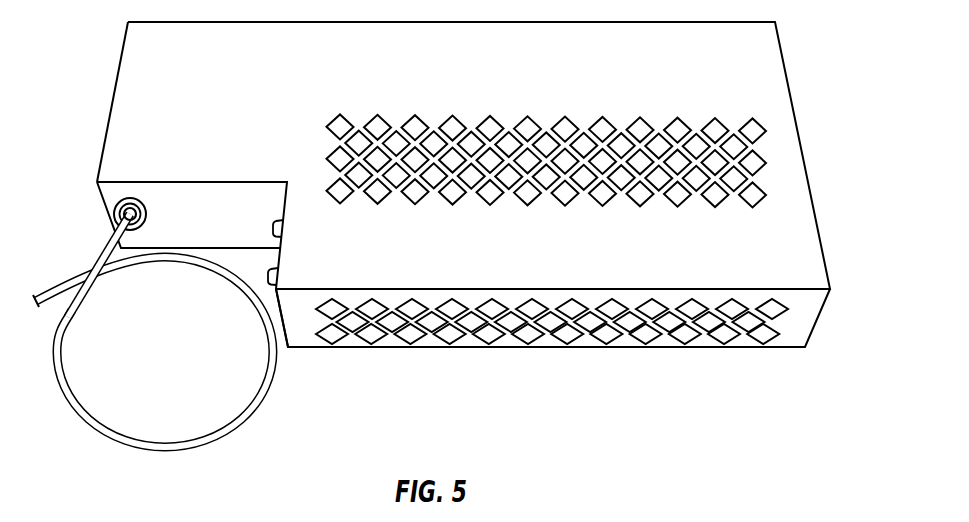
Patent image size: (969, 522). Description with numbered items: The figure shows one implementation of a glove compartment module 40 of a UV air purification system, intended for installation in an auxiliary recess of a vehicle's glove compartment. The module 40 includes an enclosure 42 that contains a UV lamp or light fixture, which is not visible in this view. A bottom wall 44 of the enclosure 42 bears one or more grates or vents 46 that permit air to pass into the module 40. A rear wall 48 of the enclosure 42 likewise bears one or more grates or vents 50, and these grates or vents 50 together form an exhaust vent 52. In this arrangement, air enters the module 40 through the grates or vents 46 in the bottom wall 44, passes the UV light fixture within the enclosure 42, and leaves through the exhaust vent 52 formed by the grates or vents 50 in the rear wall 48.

The glove compartment module 40 is at (474, 197).
The enclosure 42 is at (446, 155).
The bottom wall 44 is at (131, 152).
The grates or vents 46 is at (332, 155).
The rear wall 48 is at (296, 325).
The grates or vents 50 is at (779, 308).
The exhaust vent 52 is at (788, 337).